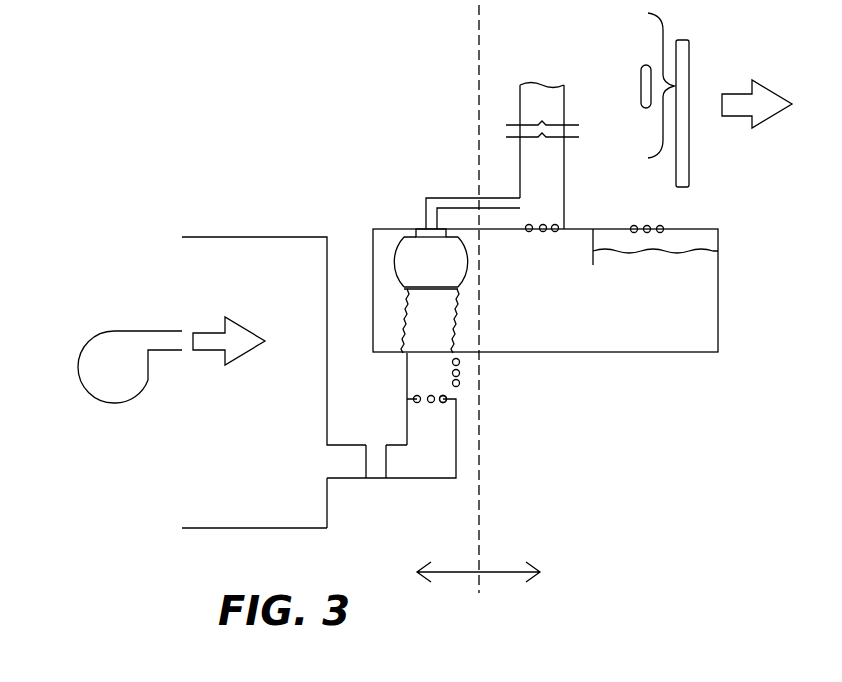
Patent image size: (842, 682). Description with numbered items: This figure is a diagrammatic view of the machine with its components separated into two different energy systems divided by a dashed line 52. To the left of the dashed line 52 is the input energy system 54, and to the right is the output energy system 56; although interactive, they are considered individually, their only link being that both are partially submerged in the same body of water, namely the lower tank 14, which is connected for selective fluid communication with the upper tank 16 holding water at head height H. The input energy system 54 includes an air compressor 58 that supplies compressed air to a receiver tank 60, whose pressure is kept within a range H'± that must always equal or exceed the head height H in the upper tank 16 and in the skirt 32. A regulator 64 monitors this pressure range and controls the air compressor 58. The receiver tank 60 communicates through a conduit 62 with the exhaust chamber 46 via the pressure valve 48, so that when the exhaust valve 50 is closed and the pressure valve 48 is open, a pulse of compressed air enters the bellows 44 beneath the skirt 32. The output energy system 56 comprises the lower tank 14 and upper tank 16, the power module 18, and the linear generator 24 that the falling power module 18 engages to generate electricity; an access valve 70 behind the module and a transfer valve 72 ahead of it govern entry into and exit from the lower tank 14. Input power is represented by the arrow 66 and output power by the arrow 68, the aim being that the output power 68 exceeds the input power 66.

The lower tank 14 is at (705, 325).
The upper tank 16 is at (520, 100).
The power module 18 is at (641, 80).
The linear generator 24 is at (690, 57).
The skirt 32 is at (398, 246).
The bellows 44 is at (406, 302).
The exhaust chamber 46 is at (428, 405).
The pressure valve 48 is at (445, 405).
The exhaust valve 50 is at (460, 372).
The dashed line 52 is at (478, 62).
The input energy system 54 is at (120, 280).
The output energy system 56 is at (798, 279).
The air compressor 58 is at (88, 357).
The receiver tank 60 is at (196, 490).
The conduit 62 is at (398, 466).
The regulator 64 is at (378, 457).
The input power arrow 66 is at (237, 352).
The output power arrow 68 is at (768, 100).
The access valve 70 is at (648, 226).
The transfer valve 72 is at (546, 226).